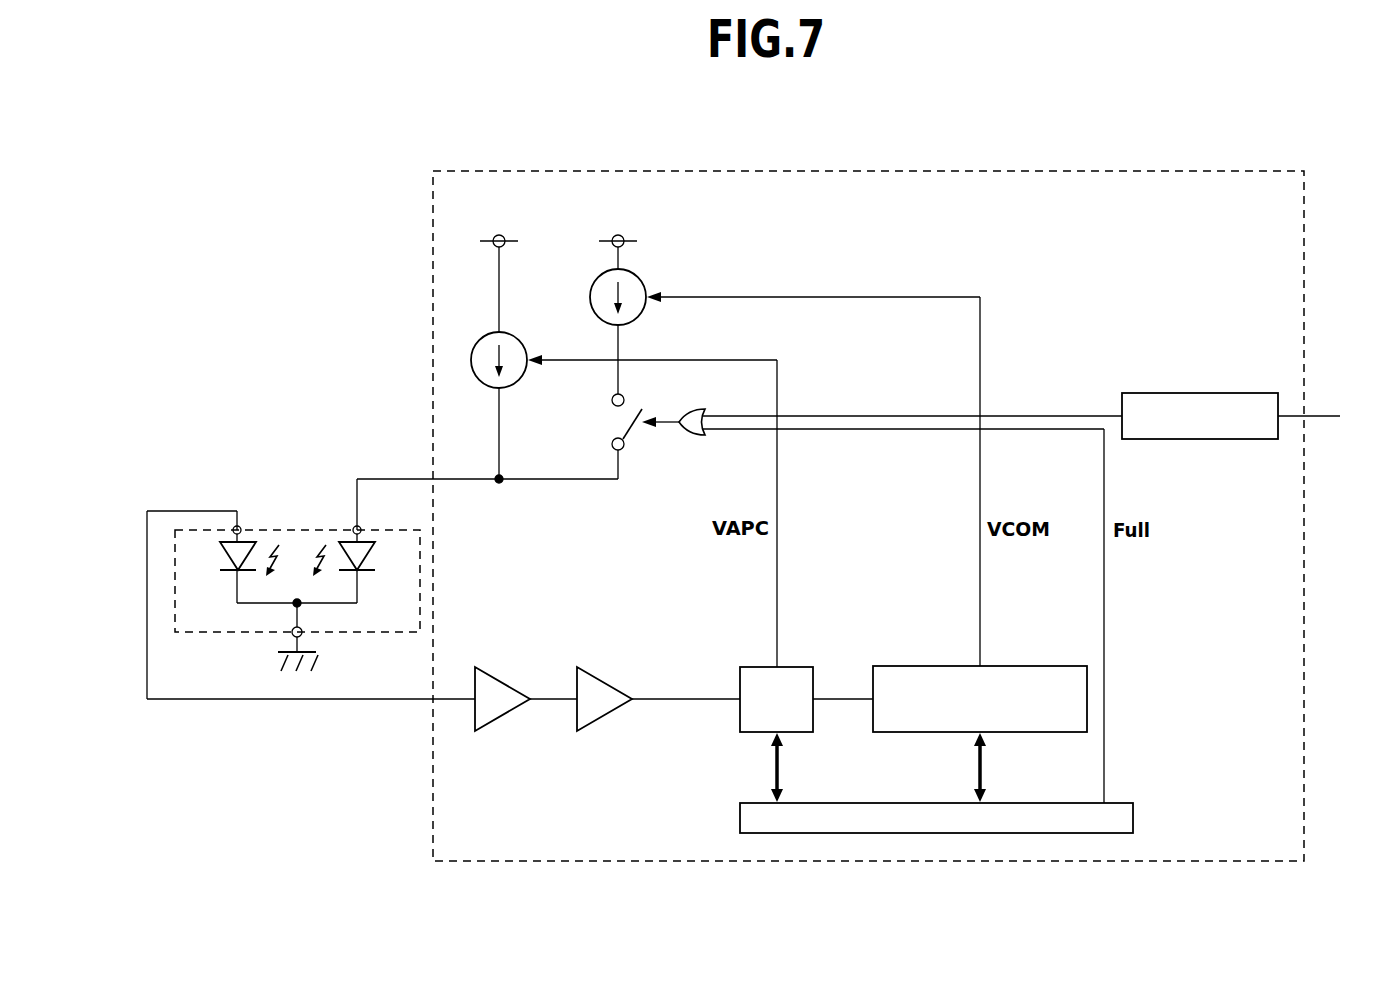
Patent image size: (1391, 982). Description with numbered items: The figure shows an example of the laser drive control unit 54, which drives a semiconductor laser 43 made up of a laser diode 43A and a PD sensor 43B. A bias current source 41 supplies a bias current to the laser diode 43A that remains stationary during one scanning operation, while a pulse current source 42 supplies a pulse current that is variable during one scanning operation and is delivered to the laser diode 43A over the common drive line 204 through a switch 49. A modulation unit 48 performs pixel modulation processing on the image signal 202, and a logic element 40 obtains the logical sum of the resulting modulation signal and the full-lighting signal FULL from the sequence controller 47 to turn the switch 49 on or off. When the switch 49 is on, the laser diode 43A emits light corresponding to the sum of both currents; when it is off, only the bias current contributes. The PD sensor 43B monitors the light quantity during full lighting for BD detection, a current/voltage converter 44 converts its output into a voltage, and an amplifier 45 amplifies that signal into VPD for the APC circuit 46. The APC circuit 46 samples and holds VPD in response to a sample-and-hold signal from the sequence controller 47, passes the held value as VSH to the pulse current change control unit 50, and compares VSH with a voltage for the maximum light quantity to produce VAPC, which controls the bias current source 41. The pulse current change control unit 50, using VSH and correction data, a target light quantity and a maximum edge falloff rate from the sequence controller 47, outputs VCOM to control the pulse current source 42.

The logic element 40 is at (695, 406).
The bias current source 41 is at (519, 341).
The pulse current source 42 is at (638, 278).
The semiconductor laser 43 is at (311, 588).
The laser diode 43A is at (361, 572).
The PD sensor 43B is at (233, 572).
The current/voltage (I/V) converter 44 is at (502, 673).
The amplifier 45 is at (603, 673).
The APC circuit 46 is at (790, 667).
The sequence controller 47 is at (1118, 803).
The modulation unit 48 is at (1197, 393).
The switch 49 is at (612, 424).
The pulse current change control unit 50 is at (1037, 666).
The laser drive control unit 54 is at (794, 171).
The image signal 202 is at (1329, 418).
The drive current line 204 is at (357, 503).